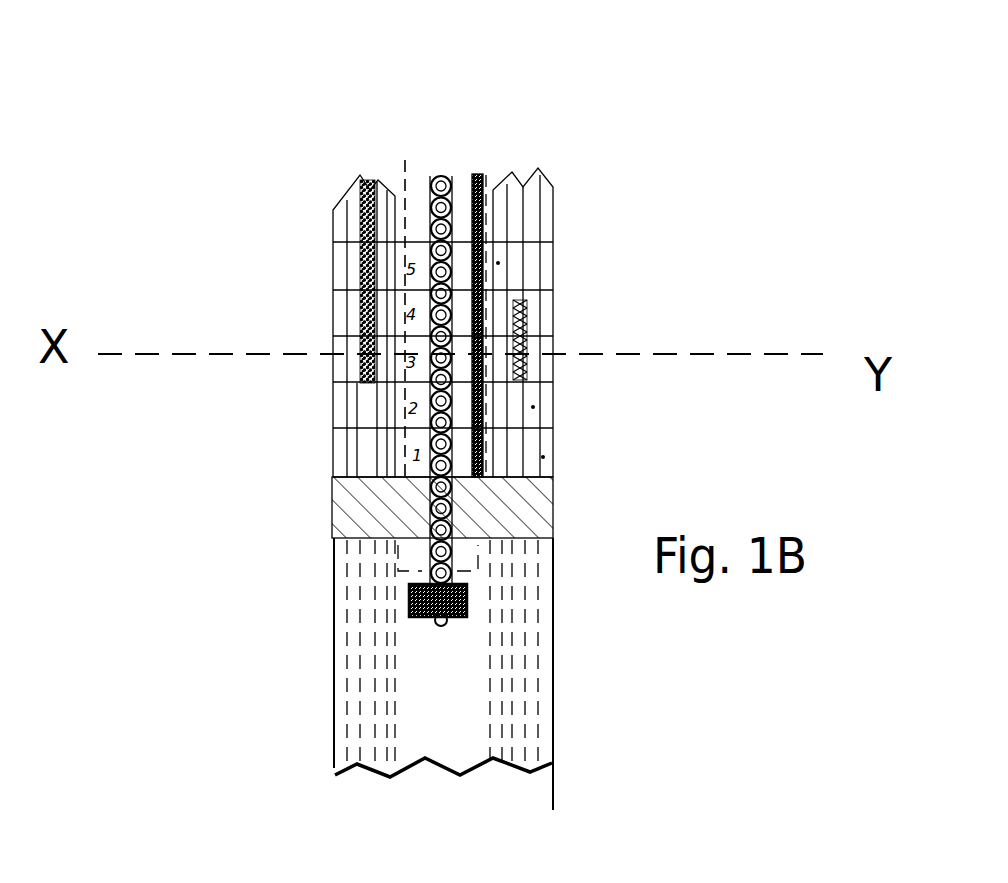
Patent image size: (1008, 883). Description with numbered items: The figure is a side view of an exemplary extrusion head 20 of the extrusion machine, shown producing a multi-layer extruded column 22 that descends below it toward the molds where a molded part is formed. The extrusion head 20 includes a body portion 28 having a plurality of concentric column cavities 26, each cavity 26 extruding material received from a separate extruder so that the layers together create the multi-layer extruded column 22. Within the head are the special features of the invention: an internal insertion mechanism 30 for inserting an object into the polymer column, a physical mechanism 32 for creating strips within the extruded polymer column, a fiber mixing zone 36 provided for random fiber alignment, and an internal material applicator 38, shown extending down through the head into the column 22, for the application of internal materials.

The extrusion head 20 is at (347, 508).
The multi-layer extruded column 22 is at (335, 718).
The concentric column cavities 26 is at (520, 352).
The body portion 28 is at (550, 186).
The internal insertion mechanism 30 is at (403, 156).
The physical mechanism 32 is at (487, 174).
The fiber mixing zone 36 is at (363, 354).
The internal material applicator 38 is at (440, 168).